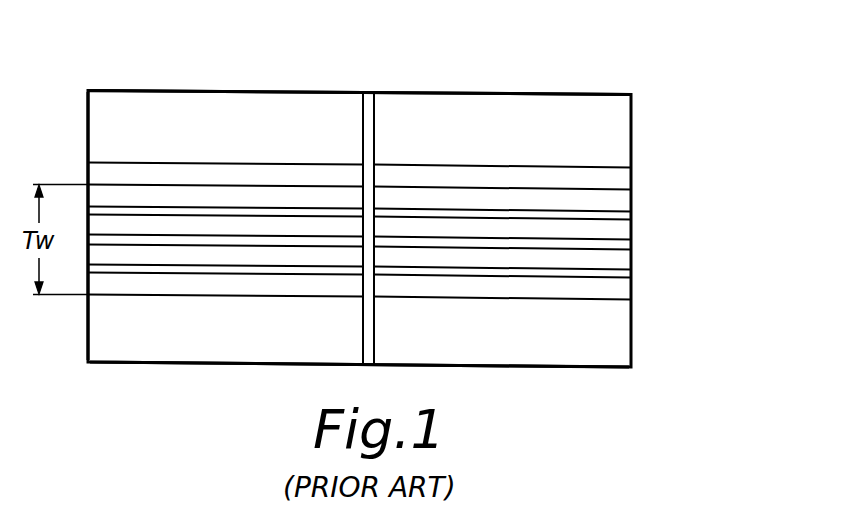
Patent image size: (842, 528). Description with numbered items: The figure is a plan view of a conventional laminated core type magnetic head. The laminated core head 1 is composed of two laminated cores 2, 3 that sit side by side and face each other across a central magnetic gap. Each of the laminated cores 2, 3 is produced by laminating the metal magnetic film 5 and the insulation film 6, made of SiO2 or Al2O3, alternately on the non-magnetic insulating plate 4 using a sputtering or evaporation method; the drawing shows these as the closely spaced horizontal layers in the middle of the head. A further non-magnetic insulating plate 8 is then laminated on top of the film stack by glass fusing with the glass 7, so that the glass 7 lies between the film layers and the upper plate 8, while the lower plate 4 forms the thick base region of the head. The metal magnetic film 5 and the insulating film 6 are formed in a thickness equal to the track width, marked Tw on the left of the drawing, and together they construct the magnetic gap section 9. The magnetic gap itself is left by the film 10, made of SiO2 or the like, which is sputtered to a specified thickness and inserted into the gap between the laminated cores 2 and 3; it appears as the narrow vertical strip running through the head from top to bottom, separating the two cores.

The laminated core head 1 is at (164, 84).
The laminated core 2 is at (88, 120).
The laminated core 3 is at (592, 93).
The non-magnetic insulating plate 4 is at (632, 353).
The metal magnetic film 5 is at (632, 260).
The insulation film 6 is at (632, 243).
The glass 7 is at (632, 175).
The non-magnetic insulating plate 8 is at (632, 122).
The magnetic gap section 9 is at (642, 209).
The film 10 is at (378, 118).